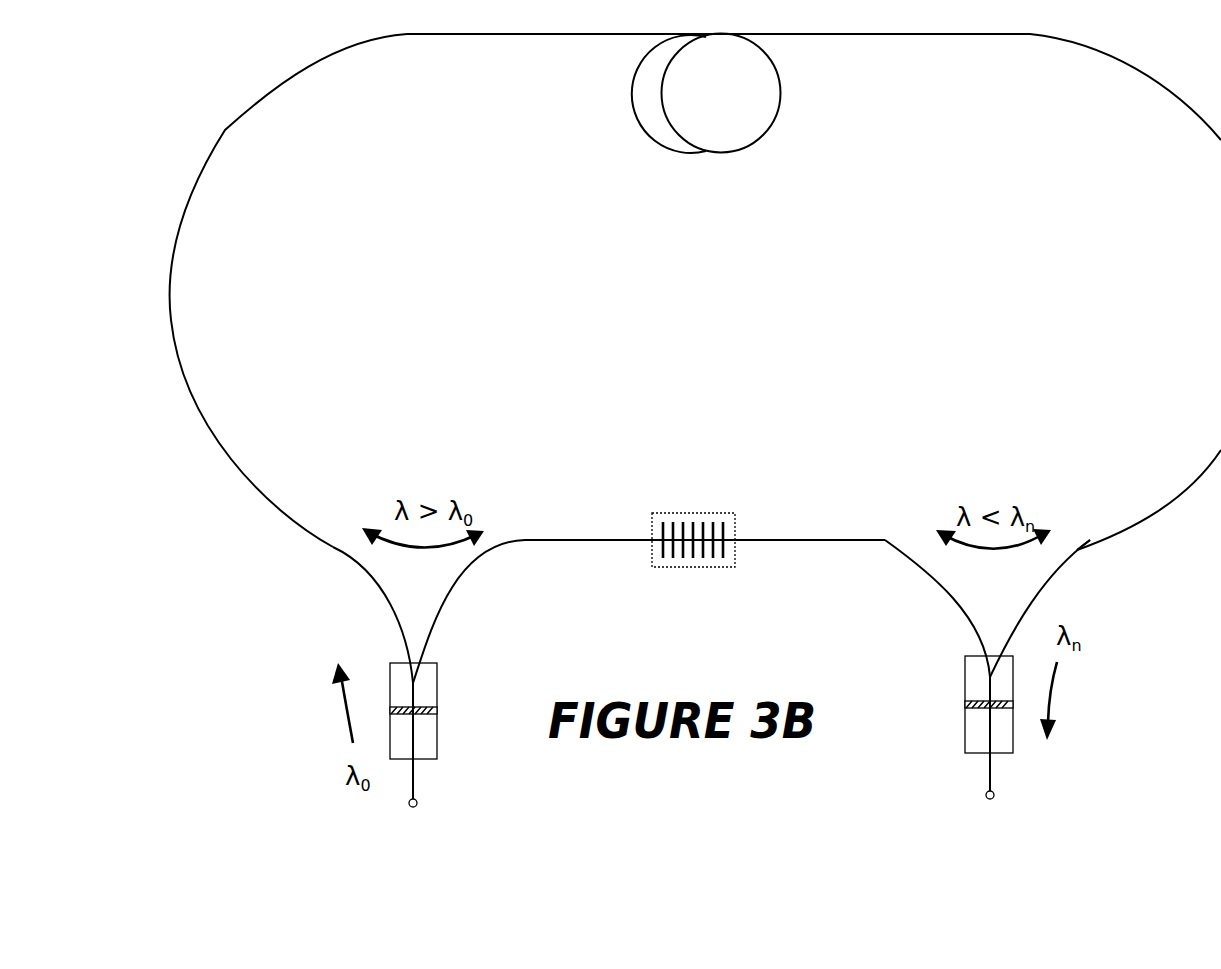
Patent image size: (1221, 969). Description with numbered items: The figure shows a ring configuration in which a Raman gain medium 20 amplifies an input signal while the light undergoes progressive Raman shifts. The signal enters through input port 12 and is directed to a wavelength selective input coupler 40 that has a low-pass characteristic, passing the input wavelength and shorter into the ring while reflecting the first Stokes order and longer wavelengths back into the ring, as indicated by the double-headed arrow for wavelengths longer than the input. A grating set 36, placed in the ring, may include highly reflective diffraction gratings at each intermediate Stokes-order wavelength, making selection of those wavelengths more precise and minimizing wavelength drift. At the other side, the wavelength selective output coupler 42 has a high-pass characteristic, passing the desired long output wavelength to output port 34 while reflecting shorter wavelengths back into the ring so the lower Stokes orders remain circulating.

The Raman gain medium 20 is at (708, 152).
The grating set 36 is at (708, 567).
The input coupler 40 is at (427, 739).
The output coupler 42 is at (970, 730).
The input port 12 is at (410, 808).
The output port 34 is at (988, 800).